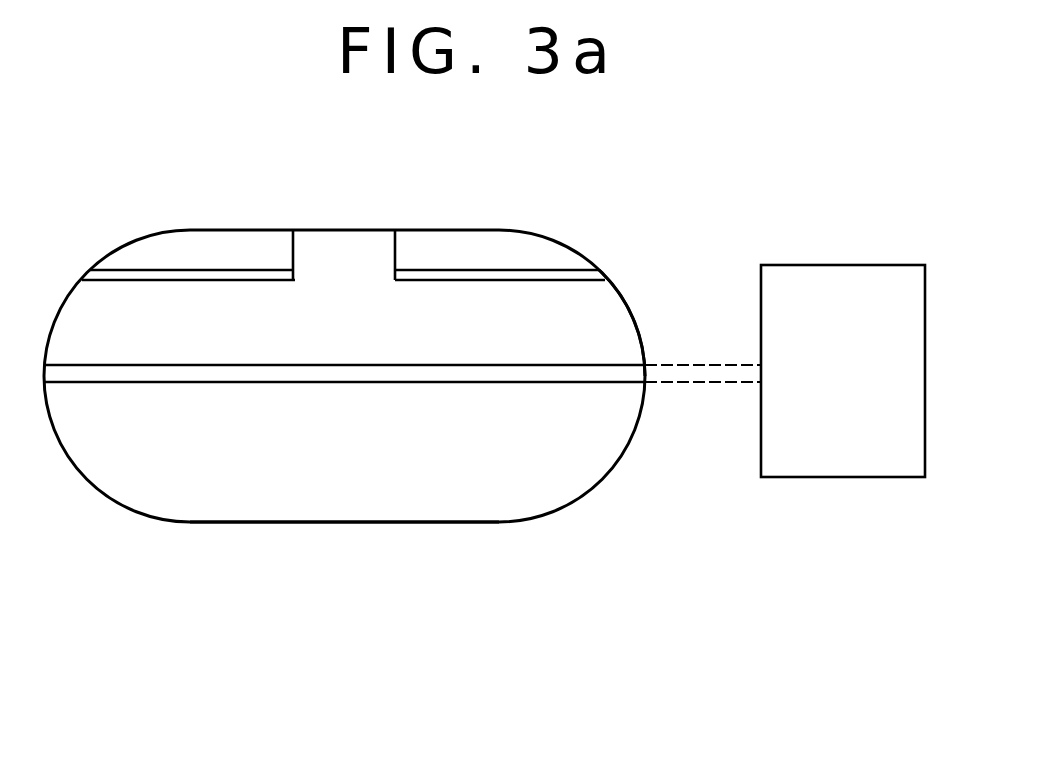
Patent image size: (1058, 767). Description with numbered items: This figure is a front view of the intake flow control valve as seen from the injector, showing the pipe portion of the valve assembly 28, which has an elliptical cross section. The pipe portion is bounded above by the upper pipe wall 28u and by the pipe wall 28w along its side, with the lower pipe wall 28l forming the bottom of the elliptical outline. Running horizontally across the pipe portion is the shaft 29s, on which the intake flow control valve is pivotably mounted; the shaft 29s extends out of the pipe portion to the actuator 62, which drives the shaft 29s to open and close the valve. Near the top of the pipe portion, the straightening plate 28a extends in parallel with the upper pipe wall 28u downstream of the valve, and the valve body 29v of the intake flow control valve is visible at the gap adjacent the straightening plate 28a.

The valve assembly 28 is at (344, 376).
The upper pipe wall 28u is at (247, 229).
The valve body 29v is at (417, 275).
The straightening plate 28a is at (551, 268).
The wall of valve member 28w is at (622, 297).
The shaft 29s is at (620, 362).
The lower portion of valve member 28l is at (345, 525).
The actuator 62 is at (810, 263).